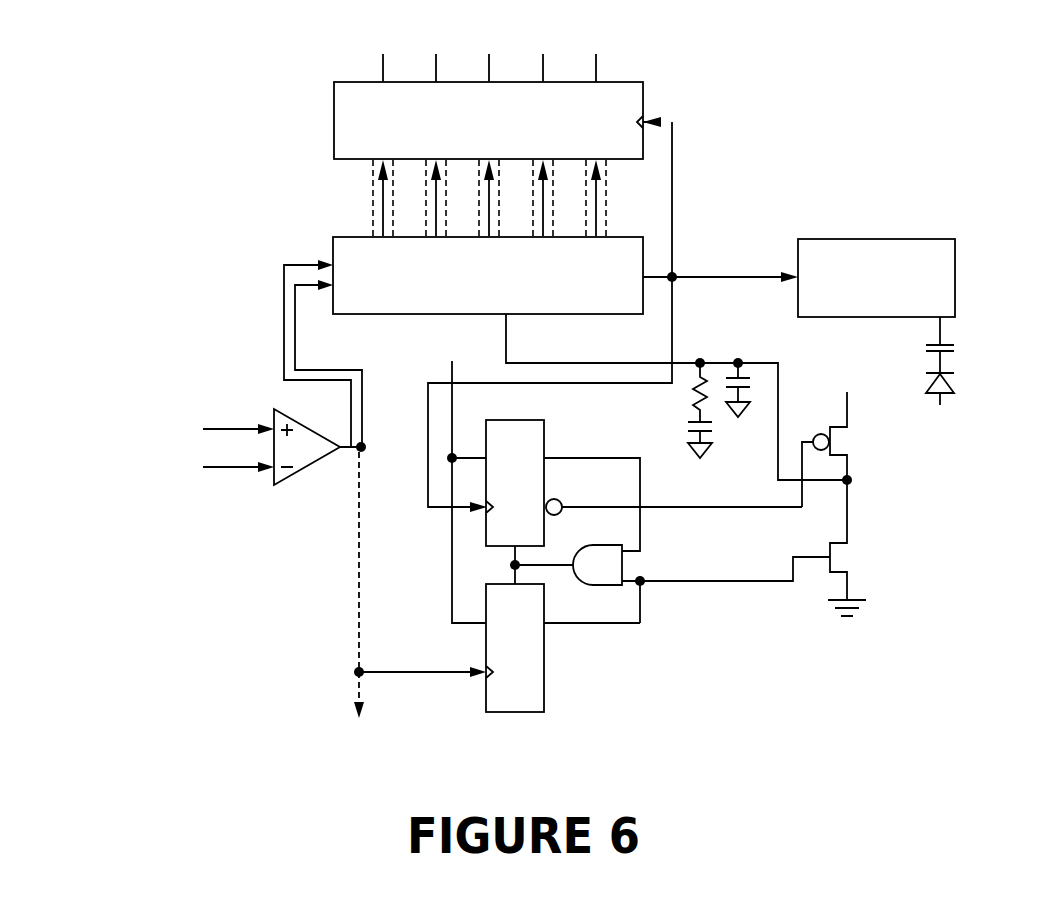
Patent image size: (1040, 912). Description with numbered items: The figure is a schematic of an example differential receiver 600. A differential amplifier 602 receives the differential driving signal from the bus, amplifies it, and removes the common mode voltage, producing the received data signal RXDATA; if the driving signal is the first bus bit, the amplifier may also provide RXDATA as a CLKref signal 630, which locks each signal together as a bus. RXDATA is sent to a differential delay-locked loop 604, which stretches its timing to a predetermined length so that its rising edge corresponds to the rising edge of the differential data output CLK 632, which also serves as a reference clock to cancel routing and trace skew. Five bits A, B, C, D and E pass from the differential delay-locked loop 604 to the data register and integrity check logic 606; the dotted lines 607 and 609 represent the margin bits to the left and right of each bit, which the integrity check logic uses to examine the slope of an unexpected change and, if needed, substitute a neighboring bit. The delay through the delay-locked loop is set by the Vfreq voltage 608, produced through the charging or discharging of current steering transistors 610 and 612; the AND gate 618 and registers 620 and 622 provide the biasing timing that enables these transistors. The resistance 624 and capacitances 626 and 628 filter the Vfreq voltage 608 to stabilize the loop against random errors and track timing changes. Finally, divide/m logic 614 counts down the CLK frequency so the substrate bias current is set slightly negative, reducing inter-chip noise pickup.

The differential receiver 600 is at (880, 172).
The differential amplifier 602 is at (272, 477).
The differential delay-locked loop (DLL) 604 is at (333, 244).
The data register and integrity check logic 606 is at (333, 119).
The dotted line (left margin bit) 607 is at (371, 214).
The Vfreq voltage 608 is at (676, 363).
The dotted line (right margin bit) 609 is at (604, 218).
The current steering transistor 610 is at (840, 439).
The current steering transistor 612 is at (840, 554).
The divide/m logic 614 is at (955, 279).
The AND gate 618 is at (631, 571).
The register 620 is at (544, 431).
The register 622 is at (544, 690).
The resistance 624 is at (703, 407).
The capacitance 626 is at (752, 381).
The capacitance 628 is at (690, 427).
The CLKref signal 630 is at (410, 677).
The differential data output CLK 632 is at (757, 275).